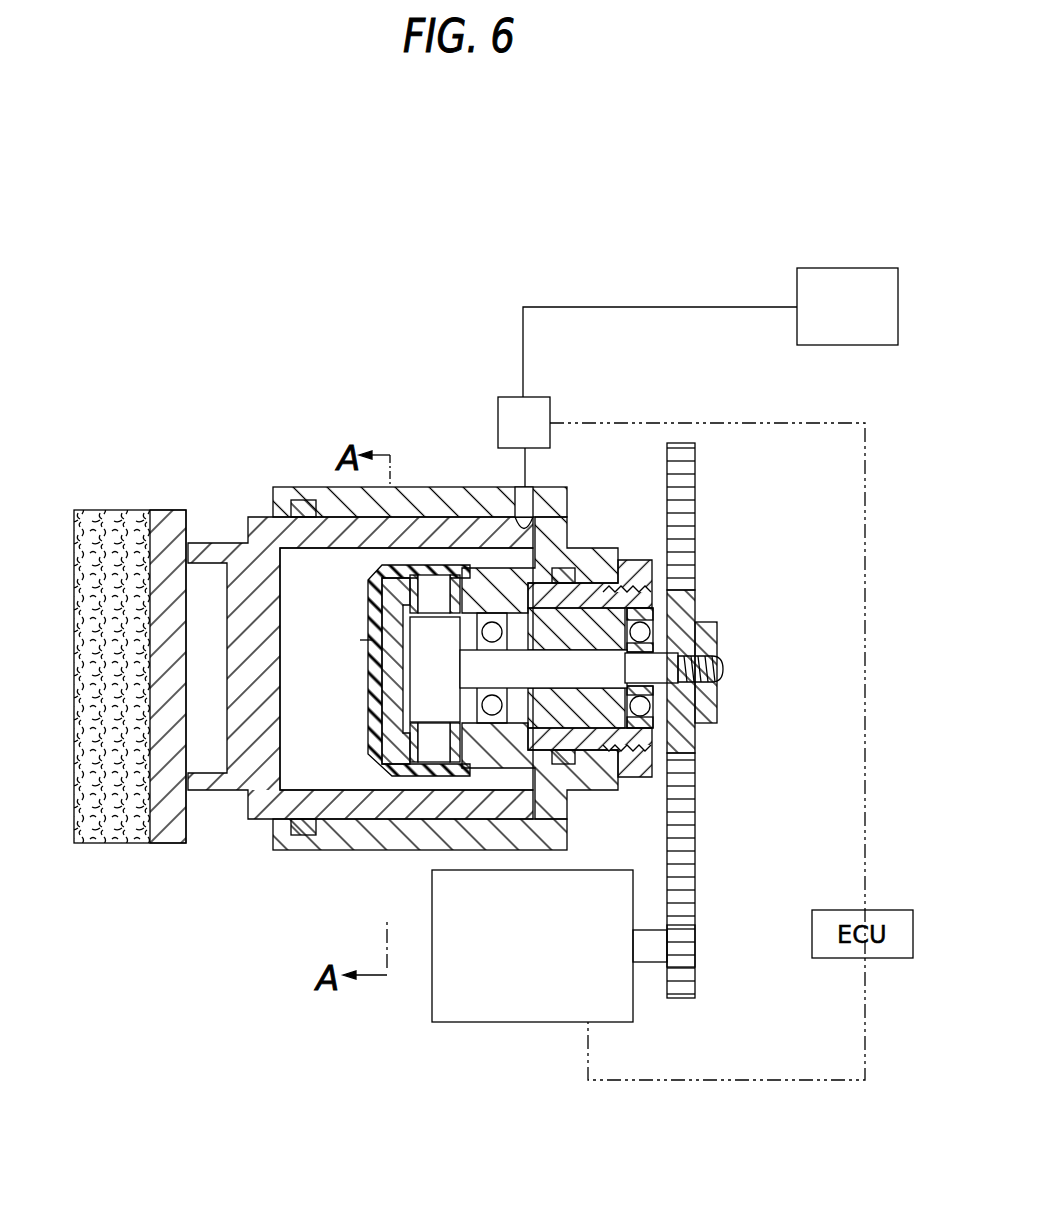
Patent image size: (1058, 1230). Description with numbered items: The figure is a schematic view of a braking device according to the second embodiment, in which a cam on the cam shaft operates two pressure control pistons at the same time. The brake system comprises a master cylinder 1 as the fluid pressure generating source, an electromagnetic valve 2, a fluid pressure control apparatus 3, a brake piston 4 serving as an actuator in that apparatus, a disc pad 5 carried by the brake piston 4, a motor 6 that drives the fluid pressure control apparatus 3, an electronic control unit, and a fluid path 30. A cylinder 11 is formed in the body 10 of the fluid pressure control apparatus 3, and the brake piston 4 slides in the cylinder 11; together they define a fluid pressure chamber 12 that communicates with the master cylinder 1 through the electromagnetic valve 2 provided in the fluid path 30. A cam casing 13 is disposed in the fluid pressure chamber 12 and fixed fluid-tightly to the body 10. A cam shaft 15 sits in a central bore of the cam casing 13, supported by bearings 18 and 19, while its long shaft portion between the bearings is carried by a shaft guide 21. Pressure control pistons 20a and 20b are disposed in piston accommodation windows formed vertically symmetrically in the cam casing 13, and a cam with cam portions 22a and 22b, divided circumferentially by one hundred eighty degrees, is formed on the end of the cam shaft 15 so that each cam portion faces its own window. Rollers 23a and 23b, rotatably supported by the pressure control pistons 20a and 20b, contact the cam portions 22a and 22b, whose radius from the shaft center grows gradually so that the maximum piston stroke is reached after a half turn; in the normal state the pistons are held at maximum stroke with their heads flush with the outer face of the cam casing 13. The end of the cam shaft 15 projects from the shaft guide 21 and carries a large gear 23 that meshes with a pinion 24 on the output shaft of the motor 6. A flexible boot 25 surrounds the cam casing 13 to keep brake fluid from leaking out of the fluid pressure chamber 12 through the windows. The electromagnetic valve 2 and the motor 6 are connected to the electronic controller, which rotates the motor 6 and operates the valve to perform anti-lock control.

The master cylinder 1 is at (830, 268).
The electromagnetic valve 2 is at (551, 410).
The fluid pressure control apparatus 3 is at (460, 428).
The brake piston 4 is at (237, 545).
The disc pad 5 is at (113, 527).
The motor 6 is at (480, 1022).
The body 10 is at (447, 487).
The cylinder 11 is at (522, 530).
The fluid pressure chamber 12 is at (310, 592).
The cam casing 13 is at (387, 722).
The cam shaft 15 is at (660, 663).
The bearing 18 is at (552, 790).
The bearing 19 is at (697, 705).
The pressure control piston 20a is at (432, 597).
The pressure control piston 20b is at (433, 747).
The shaft guide 21 is at (585, 628).
The cam portion 22a is at (425, 672).
The cam portion 22b is at (425, 672).
The large gear 23 is at (683, 835).
The roller 23a is at (318, 487).
The roller 23b is at (440, 762).
The pinion 24 is at (677, 965).
The flexible boot 25 is at (373, 640).
The fluid path 30 is at (660, 307).